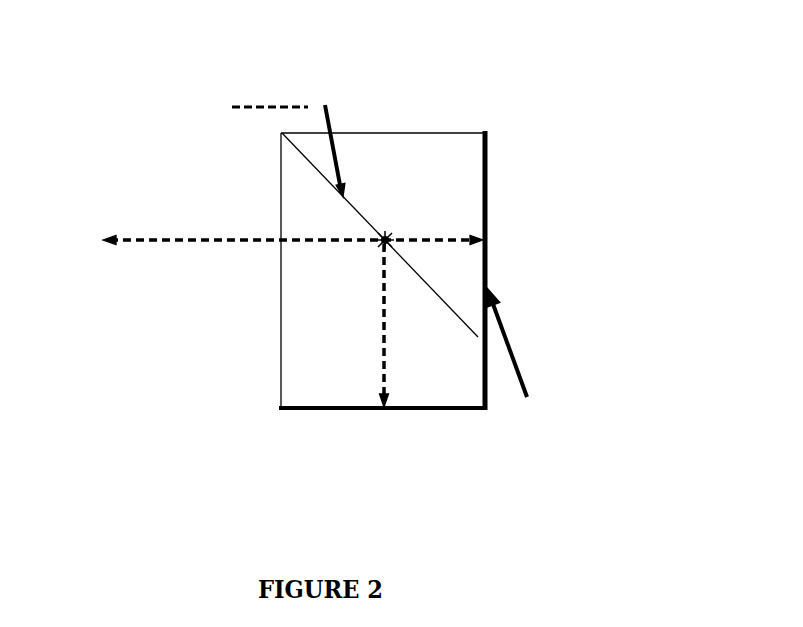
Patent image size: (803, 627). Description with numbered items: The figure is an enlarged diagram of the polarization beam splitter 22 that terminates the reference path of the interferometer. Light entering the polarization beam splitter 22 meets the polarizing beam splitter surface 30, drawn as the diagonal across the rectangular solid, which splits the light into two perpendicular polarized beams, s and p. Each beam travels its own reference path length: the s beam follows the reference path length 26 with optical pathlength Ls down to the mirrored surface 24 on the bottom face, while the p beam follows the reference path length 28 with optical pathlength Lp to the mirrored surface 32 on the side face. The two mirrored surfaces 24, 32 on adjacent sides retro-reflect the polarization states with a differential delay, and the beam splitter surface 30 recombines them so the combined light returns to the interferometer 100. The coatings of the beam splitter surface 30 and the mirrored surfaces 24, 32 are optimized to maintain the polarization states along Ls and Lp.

The interferometer 100 is at (137, 197).
The polarization beam splitter 22 is at (393, 125).
The mirrored surface 24 is at (360, 416).
The reference path length 26 is at (378, 314).
The reference path length 28 is at (452, 228).
The polarizing beam splitter surface 30 is at (288, 132).
The mirrored surface 32 is at (524, 364).